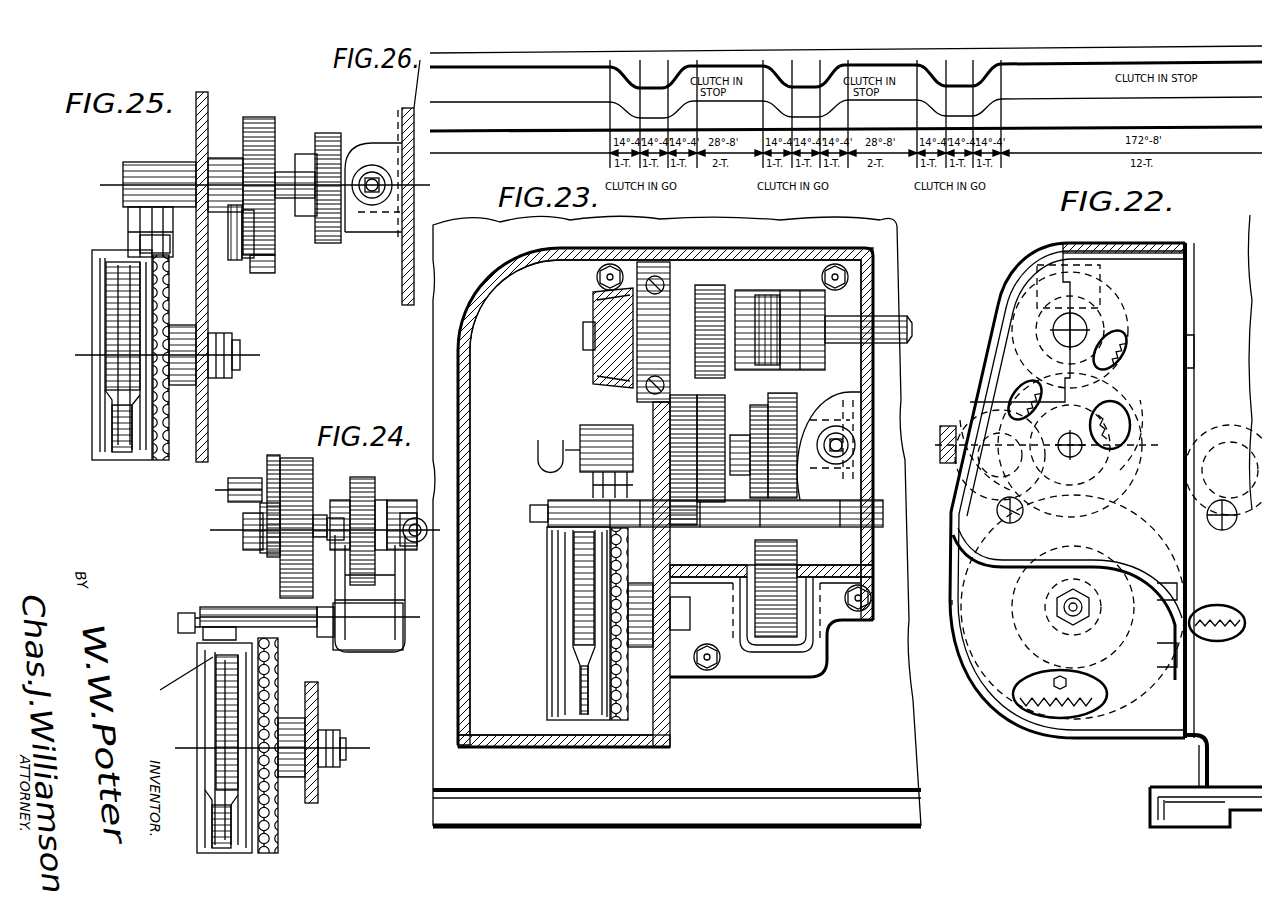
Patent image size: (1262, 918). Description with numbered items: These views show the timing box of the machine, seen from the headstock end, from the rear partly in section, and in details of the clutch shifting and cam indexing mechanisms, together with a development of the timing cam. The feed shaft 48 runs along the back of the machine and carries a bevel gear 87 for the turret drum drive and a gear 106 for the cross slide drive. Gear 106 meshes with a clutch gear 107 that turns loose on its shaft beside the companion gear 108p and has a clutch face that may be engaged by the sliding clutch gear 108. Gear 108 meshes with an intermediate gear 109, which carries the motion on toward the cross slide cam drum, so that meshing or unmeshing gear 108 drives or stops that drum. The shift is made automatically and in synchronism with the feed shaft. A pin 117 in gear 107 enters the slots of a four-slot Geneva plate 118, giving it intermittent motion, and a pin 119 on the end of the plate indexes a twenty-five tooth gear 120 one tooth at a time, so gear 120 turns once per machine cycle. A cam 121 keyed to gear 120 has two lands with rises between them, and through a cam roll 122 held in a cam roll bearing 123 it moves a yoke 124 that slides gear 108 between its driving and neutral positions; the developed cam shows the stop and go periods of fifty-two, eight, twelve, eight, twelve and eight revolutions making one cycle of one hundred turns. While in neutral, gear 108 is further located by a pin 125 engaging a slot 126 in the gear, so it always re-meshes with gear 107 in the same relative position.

In FIG. 23, the feed shaft 48 is at (905, 320).
In FIG. 22, the feed shaft 48 is at (1080, 322).
In FIG. 23, the bevel gear bracket 87 is at (597, 358).
In FIG. 23, the gear 106 is at (717, 290).
In FIG. 22, the gear 106 is at (1127, 340).
In FIG. 25, the clutch gear 107 is at (262, 256).
In FIG. 24, the clutch gear 107 is at (292, 460).
In FIG. 23, the clutch gear 107 is at (645, 412).
In FIG. 22, the clutch gear 107 is at (1010, 390).
In FIG. 25, the sliding clutch gear 108 is at (328, 243).
In FIG. 24, the sliding clutch gear 108 is at (352, 488).
In FIG. 23, the sliding clutch gear 108 is at (787, 396).
In FIG. 22, the sliding clutch gear 108 is at (1118, 410).
In FIG. 25, the gear 108 prime 108p is at (287, 170).
In FIG. 23, the gear 108 prime 108p is at (742, 435).
In FIG. 23, the intermediate gear 109 is at (780, 622).
In FIG. 22, the intermediate gear 109 is at (1223, 620).
In FIG. 25, the pin 117 is at (240, 262).
In FIG. 24, the pin 117 is at (262, 482).
In FIG. 25, the Geneva plate 118 is at (247, 260).
In FIG. 24, the Geneva plate 118 is at (274, 457).
In FIG. 22, the Geneva plate 118 is at (1018, 522).
In FIG. 25, the pin 119 is at (150, 240).
In FIG. 25, the gear 120 is at (162, 462).
In FIG. 24, the gear 120 is at (280, 835).
In FIG. 23, the gear 120 is at (622, 717).
In FIG. 22, the gear 120 is at (1037, 700).
In FIG. 25, the cam 121 is at (95, 455).
In FIG. 24, the cam 121 is at (203, 850).
In FIG. 23, the cam 121 is at (548, 641).
In FIG. 22, the cam 121 is at (980, 667).
In FIG. 24, the cam roll 122 is at (164, 680).
In FIG. 23, the cam roll 122 is at (545, 540).
In FIG. 22, the cam roll 122 is at (1005, 540).
In FIG. 24, the cam roll bearing 123 is at (242, 613).
In FIG. 23, the cam roll bearing 123 is at (570, 502).
In FIG. 24, the yoke 124 is at (358, 650).
In FIG. 25, the pin 125 is at (374, 160).
In FIG. 24, the pin 125 is at (428, 542).
In FIG. 23, the pin 125 is at (847, 445).
In FIG. 25, the slot 126 is at (370, 162).
In FIG. 24, the slot 126 is at (410, 513).